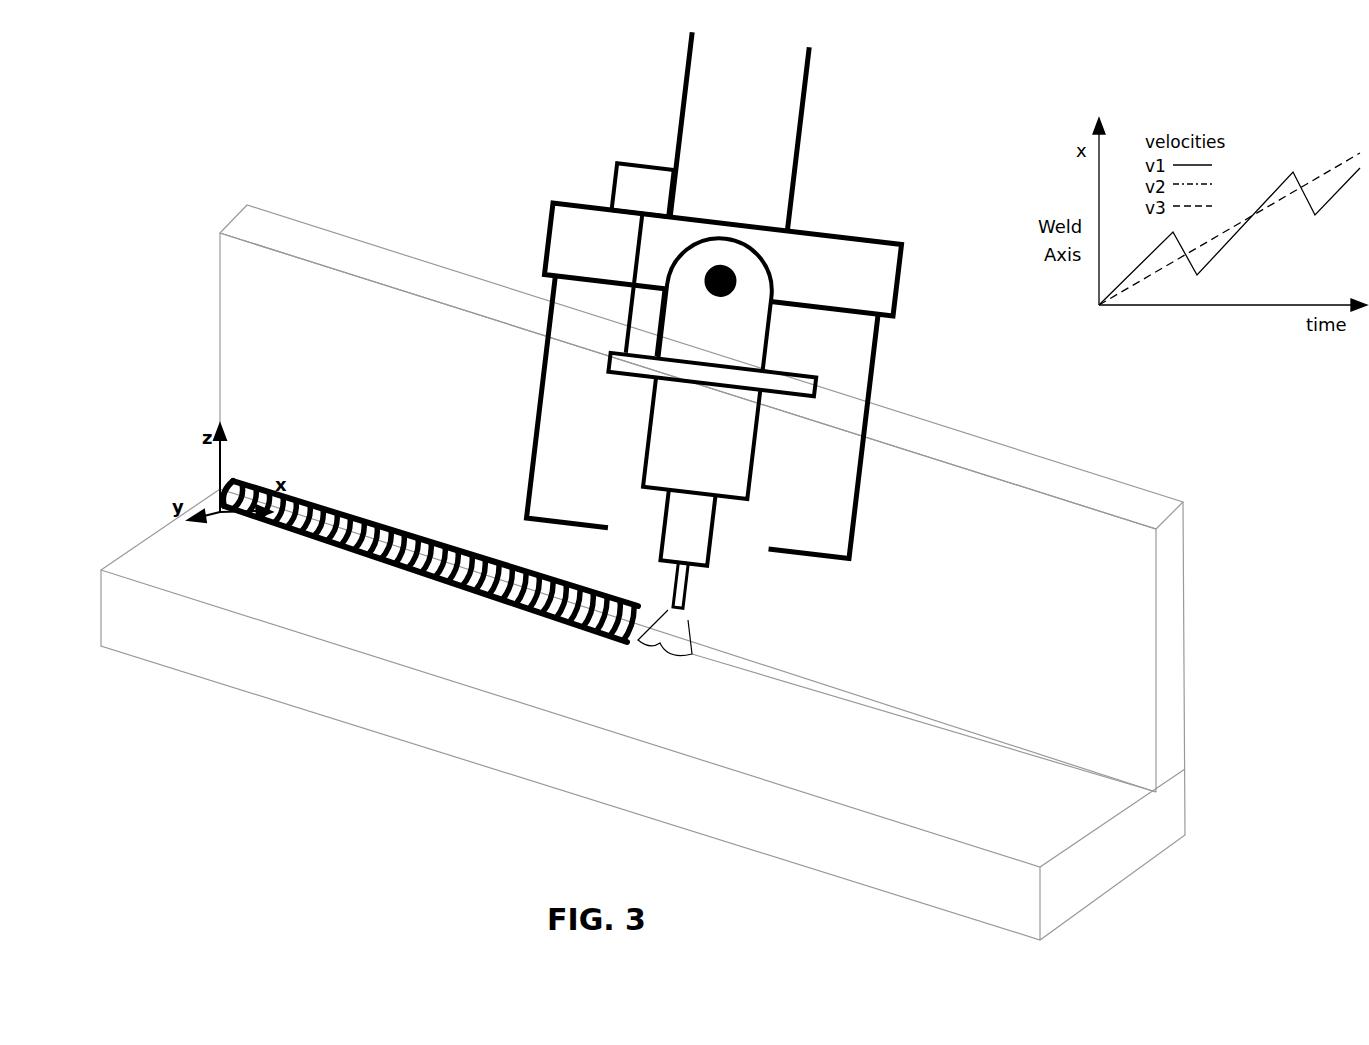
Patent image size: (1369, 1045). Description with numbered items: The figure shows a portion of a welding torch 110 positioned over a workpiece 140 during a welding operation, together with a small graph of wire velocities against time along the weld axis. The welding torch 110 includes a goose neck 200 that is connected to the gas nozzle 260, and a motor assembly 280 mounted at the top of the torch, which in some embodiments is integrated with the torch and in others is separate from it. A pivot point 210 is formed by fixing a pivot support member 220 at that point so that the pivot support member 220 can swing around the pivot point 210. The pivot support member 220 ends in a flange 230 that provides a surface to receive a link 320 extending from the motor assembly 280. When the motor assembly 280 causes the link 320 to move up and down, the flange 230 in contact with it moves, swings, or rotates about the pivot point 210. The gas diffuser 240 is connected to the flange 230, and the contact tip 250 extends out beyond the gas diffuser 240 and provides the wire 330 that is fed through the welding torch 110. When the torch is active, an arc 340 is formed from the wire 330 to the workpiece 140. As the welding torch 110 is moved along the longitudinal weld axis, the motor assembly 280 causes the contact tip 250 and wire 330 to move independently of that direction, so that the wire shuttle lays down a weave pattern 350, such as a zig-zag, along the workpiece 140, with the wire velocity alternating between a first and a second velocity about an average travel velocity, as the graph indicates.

The welding torch 110 is at (460, 101).
The workpiece 140 is at (1188, 735).
The goose neck 200 is at (808, 82).
The pivot point 210 is at (737, 281).
The pivot support member 220 is at (717, 301).
The flange 230 is at (795, 370).
The gas diffuser 240 is at (760, 462).
The contact tip 250 is at (718, 538).
The gas nozzle 260 is at (540, 377).
The motor assembly 280 is at (643, 163).
The link 320 is at (637, 250).
The wire 330 is at (693, 587).
The arc 340 is at (658, 648).
The weld bead 350 is at (370, 565).